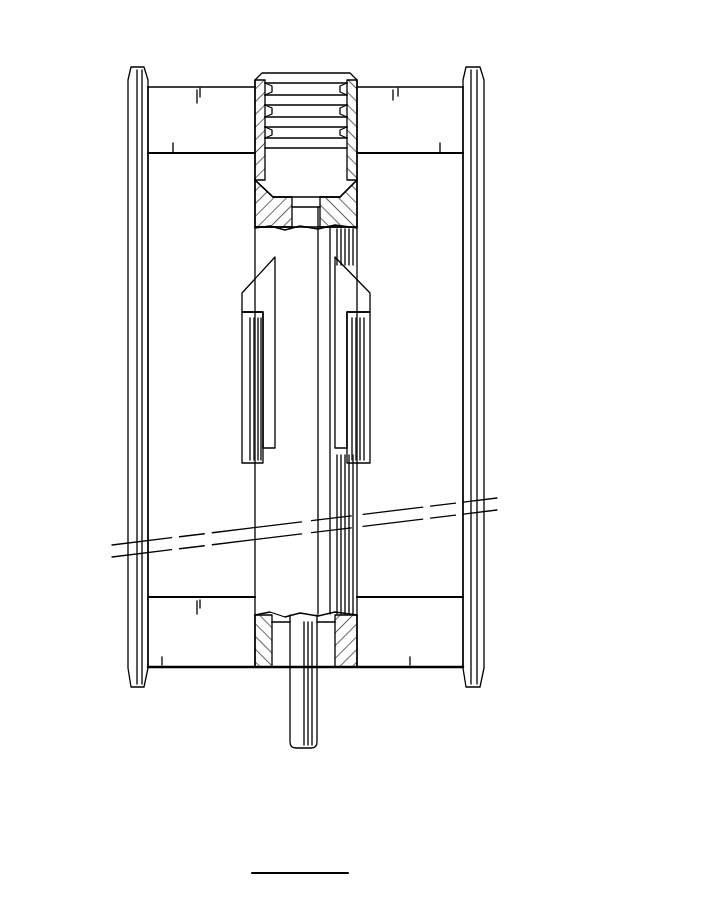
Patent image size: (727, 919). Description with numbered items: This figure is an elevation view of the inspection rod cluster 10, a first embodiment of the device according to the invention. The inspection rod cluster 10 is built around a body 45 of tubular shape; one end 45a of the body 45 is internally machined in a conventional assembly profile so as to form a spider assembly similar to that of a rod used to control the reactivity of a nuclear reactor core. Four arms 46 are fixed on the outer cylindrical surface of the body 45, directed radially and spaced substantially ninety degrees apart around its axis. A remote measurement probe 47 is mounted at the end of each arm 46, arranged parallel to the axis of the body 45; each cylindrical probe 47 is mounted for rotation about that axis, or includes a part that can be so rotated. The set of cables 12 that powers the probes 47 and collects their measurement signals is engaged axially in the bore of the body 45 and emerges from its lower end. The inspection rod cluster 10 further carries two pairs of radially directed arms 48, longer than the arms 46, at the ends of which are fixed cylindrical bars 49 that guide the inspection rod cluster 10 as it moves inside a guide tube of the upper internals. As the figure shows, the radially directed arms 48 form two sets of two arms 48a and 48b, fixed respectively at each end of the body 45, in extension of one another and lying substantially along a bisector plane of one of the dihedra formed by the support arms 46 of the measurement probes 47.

The inspection rod cluster 10 is at (499, 194).
The set of cables 12 is at (296, 720).
The body 45 is at (268, 583).
The end of the body 45a is at (260, 72).
The arms 46 is at (251, 285).
The remote measurement probe 47 is at (245, 440).
The radially directed arms 48 is at (374, 77).
The arms 48a is at (188, 95).
The arms 48b is at (186, 655).
The cylindrical bars 49 is at (131, 462).